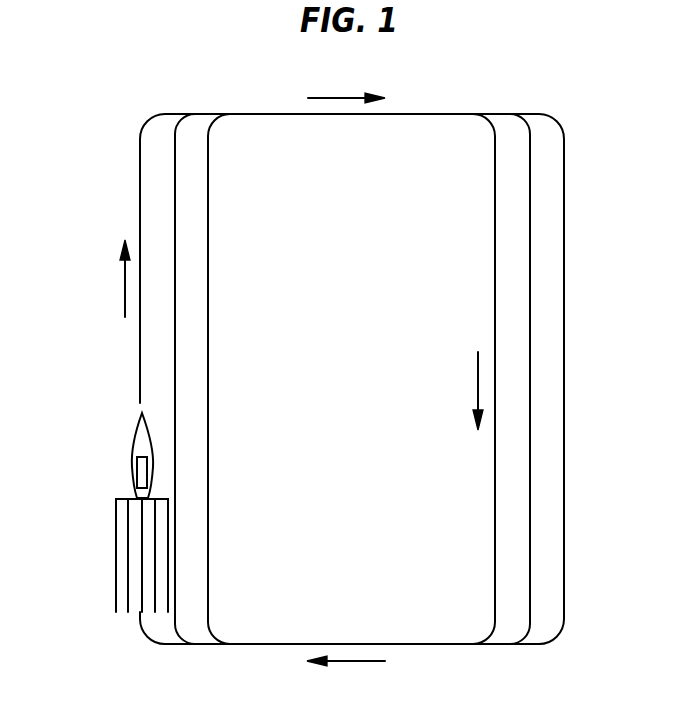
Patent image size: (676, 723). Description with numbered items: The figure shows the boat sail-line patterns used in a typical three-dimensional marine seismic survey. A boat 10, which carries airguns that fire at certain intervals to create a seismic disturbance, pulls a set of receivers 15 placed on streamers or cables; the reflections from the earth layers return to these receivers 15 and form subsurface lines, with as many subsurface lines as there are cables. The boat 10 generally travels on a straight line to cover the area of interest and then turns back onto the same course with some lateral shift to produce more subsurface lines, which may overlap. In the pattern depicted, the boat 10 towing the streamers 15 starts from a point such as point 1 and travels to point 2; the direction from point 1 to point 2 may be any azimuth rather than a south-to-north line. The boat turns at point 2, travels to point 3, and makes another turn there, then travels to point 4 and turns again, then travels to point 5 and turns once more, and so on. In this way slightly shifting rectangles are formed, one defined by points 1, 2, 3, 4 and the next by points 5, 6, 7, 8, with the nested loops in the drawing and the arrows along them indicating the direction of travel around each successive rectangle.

The point 1 is at (243, 646).
The point 2 is at (243, 243).
The point 3 is at (458, 231).
The point 4 is at (458, 530).
The point 5 is at (263, 530).
The point 6 is at (263, 231).
The point 7 is at (441, 231).
The point 8 is at (441, 530).
The boat 10 is at (131, 462).
The receivers 15 is at (88, 557).